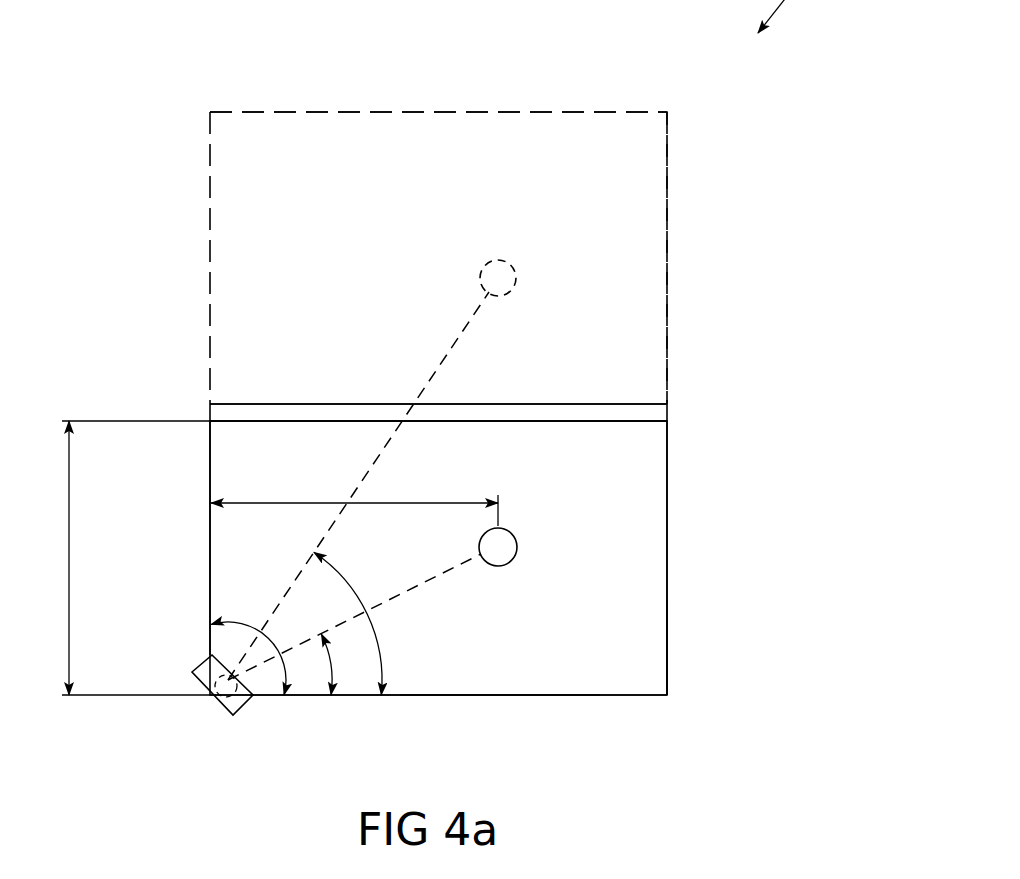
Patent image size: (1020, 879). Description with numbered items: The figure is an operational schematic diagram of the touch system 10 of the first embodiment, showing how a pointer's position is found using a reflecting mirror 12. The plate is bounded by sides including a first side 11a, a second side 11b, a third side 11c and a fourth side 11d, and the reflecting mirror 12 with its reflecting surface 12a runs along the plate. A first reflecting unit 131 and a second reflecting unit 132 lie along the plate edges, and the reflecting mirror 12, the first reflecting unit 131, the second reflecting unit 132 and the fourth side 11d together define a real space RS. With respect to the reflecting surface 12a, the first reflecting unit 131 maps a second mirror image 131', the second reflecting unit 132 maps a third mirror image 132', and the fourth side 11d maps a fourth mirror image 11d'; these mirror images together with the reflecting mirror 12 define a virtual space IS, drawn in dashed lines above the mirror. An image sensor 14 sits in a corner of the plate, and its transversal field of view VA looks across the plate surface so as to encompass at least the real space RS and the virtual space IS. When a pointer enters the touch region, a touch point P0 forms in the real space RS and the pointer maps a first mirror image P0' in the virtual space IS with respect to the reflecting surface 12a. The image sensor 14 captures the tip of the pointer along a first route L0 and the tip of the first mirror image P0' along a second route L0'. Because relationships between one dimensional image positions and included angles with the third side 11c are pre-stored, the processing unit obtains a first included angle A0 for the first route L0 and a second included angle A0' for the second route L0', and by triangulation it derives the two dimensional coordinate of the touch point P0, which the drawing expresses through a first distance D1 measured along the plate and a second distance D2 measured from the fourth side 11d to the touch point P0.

The optical touch system 10 is at (232, 710).
The image sensor 14 is at (218, 698).
The upper side of frame 11a is at (585, 404).
The right side of frame 11b is at (667, 513).
The third side 11c is at (628, 697).
The fourth side 11d is at (149, 529).
The fourth mirror image 11d' is at (134, 258).
The reflecting mirror 12 is at (667, 413).
The reflecting surface 12a is at (580, 421).
The first reflecting unit 131 is at (740, 647).
The second mirror image 131' is at (723, 258).
The second reflecting unit 132 is at (500, 744).
The third mirror image 132' is at (438, 61).
The virtual space IS is at (265, 272).
The real space RS is at (547, 653).
The touch point P0 is at (622, 556).
The first mirror image P0' is at (626, 287).
The first route L0 is at (354, 655).
The second route L0' is at (312, 486).
The first distance D1 is at (49, 558).
The second distance D2 is at (354, 498).
The transversal field of view VA is at (248, 646).
The first included angle A0 is at (342, 664).
The second included angle A0' is at (348, 623).